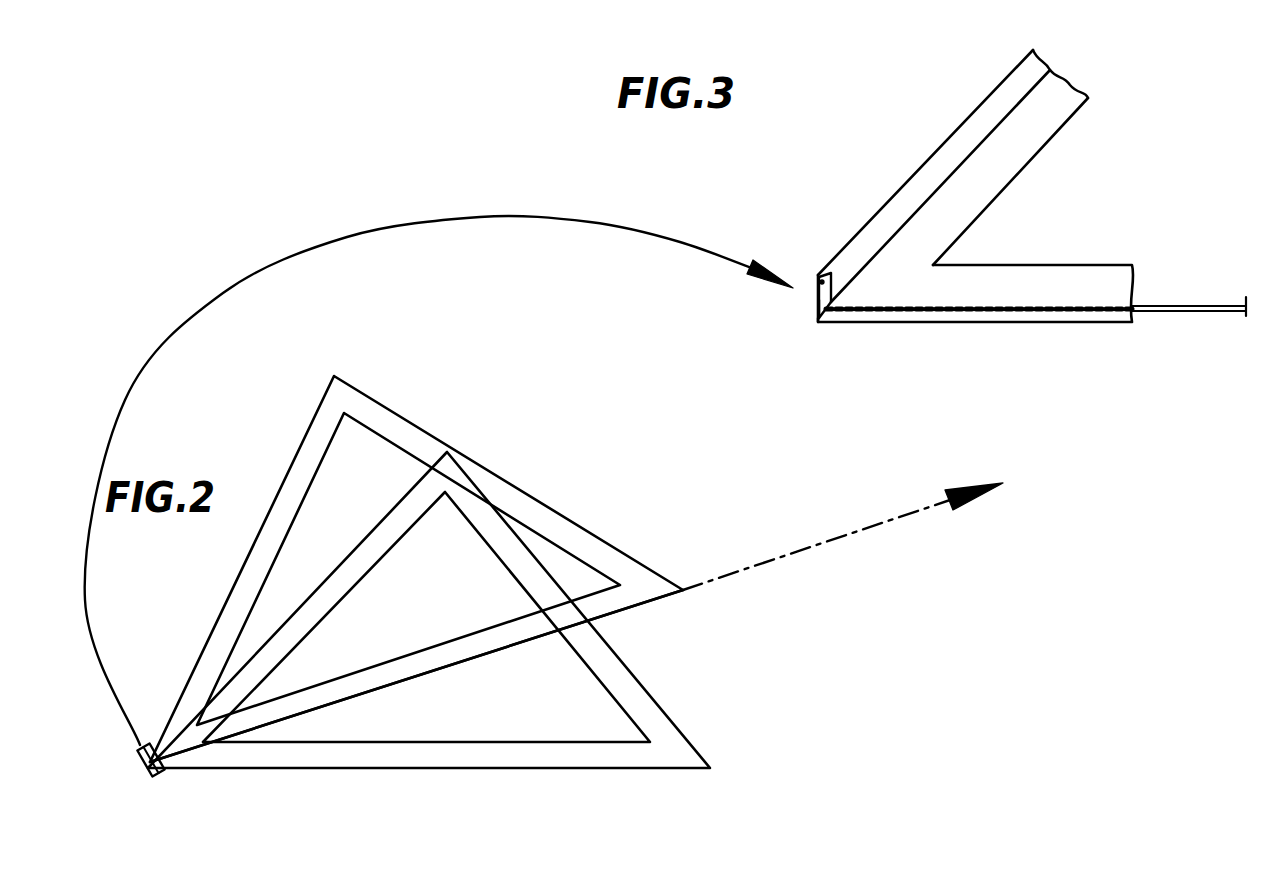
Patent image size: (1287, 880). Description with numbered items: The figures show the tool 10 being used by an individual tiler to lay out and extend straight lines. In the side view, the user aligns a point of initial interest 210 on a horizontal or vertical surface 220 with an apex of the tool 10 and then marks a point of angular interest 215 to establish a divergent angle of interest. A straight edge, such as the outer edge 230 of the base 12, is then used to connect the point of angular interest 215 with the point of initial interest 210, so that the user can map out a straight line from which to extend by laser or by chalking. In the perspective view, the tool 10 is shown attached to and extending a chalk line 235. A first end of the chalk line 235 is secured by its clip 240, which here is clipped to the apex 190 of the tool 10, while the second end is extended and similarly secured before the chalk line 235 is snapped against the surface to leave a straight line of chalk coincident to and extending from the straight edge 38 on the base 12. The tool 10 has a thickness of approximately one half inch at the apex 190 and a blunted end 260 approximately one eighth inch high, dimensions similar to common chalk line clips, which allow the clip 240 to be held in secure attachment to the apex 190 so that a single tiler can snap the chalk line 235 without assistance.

In FIG. 2, the tool 10 is at (534, 426).
In FIG. 3, the tool 10 is at (898, 126).
In FIG. 3, the base 12 is at (1085, 340).
In FIG. 3, the straight edge 38 is at (972, 343).
In FIG. 2, the apex 190 is at (151, 778).
In FIG. 3, the apex 190 is at (818, 322).
In FIG. 2, the point of initial interest 210 is at (138, 752).
In FIG. 2, the point of angular interest 215 is at (592, 622).
In FIG. 2, the horizontal or vertical surface 220 is at (426, 770).
In FIG. 2, the outer edge 230 is at (448, 678).
In FIG. 3, the chalk line 235 is at (1195, 300).
In FIG. 3, the clip 240 is at (819, 277).
In FIG. 3, the blunted end 260 is at (818, 300).